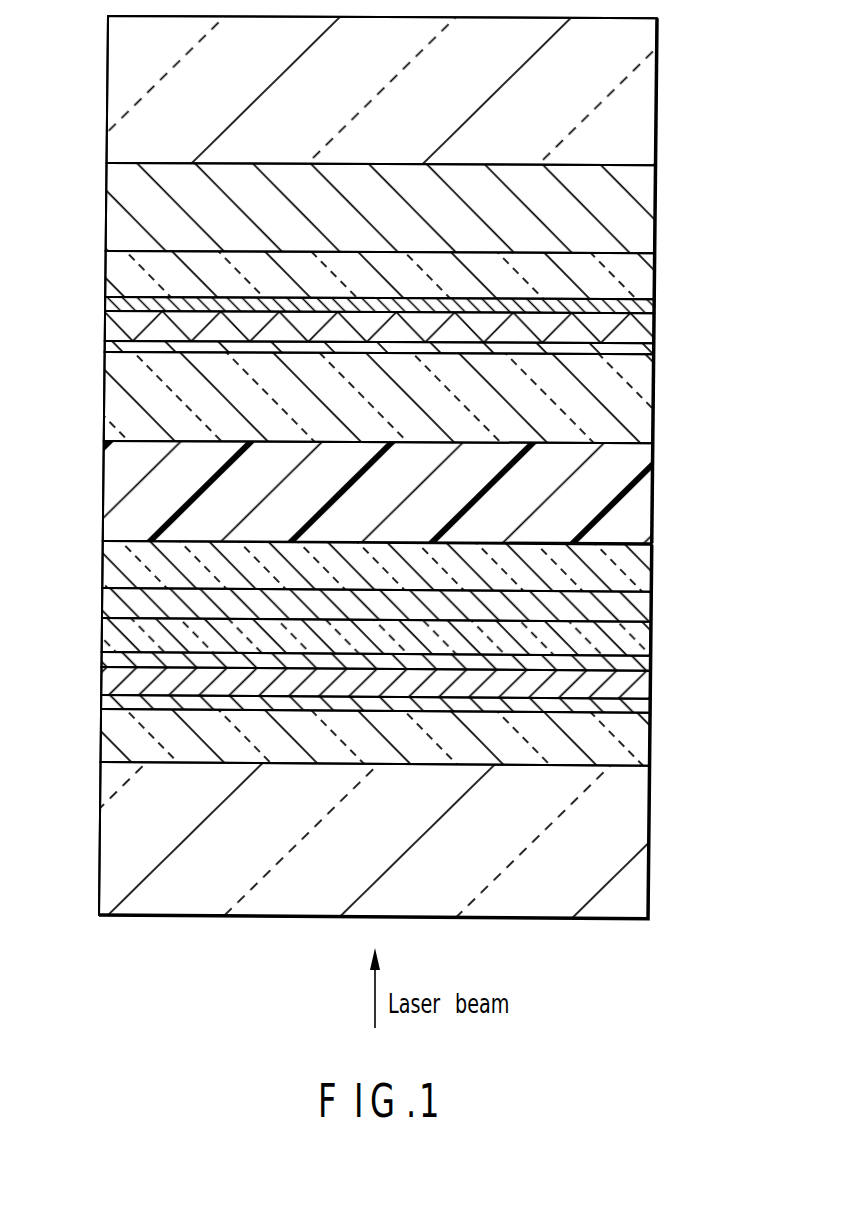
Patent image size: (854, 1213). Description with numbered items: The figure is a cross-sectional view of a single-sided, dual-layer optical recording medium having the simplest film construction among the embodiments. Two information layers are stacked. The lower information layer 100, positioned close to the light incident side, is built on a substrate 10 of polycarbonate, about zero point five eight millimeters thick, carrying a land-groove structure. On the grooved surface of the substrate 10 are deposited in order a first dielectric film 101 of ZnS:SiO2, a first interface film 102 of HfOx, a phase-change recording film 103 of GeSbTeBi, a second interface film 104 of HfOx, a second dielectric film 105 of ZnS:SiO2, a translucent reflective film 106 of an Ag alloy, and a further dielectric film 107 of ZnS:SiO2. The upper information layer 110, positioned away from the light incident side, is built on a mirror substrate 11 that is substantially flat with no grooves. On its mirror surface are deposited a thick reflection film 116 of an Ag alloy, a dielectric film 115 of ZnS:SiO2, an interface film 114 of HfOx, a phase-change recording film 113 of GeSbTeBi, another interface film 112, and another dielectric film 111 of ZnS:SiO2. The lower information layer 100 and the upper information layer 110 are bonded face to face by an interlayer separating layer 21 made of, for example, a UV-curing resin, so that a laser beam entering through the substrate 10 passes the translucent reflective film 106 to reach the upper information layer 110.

The substrate 10 is at (649, 824).
The mirror substrate 11 is at (656, 100).
The interlayer separating layer 21 is at (652, 497).
The L0 information layer 100 is at (377, 653).
The first dielectric film 101 is at (650, 746).
The first interface film 102 is at (651, 704).
The recording film 103 is at (651, 685).
The second interface film 104 is at (651, 658).
The second dielectric film 105 is at (651, 630).
The translucent reflective film 106 is at (651, 600).
The dielectric film 107 is at (651, 567).
The L1 information layer 110 is at (379, 303).
The dielectric film 111 is at (653, 400).
The interface film 112 is at (655, 350).
The phase-change recording film 113 is at (655, 330).
The interface film 114 is at (655, 304).
The dielectric film 115 is at (655, 268).
The thick reflection film 116 is at (655, 208).